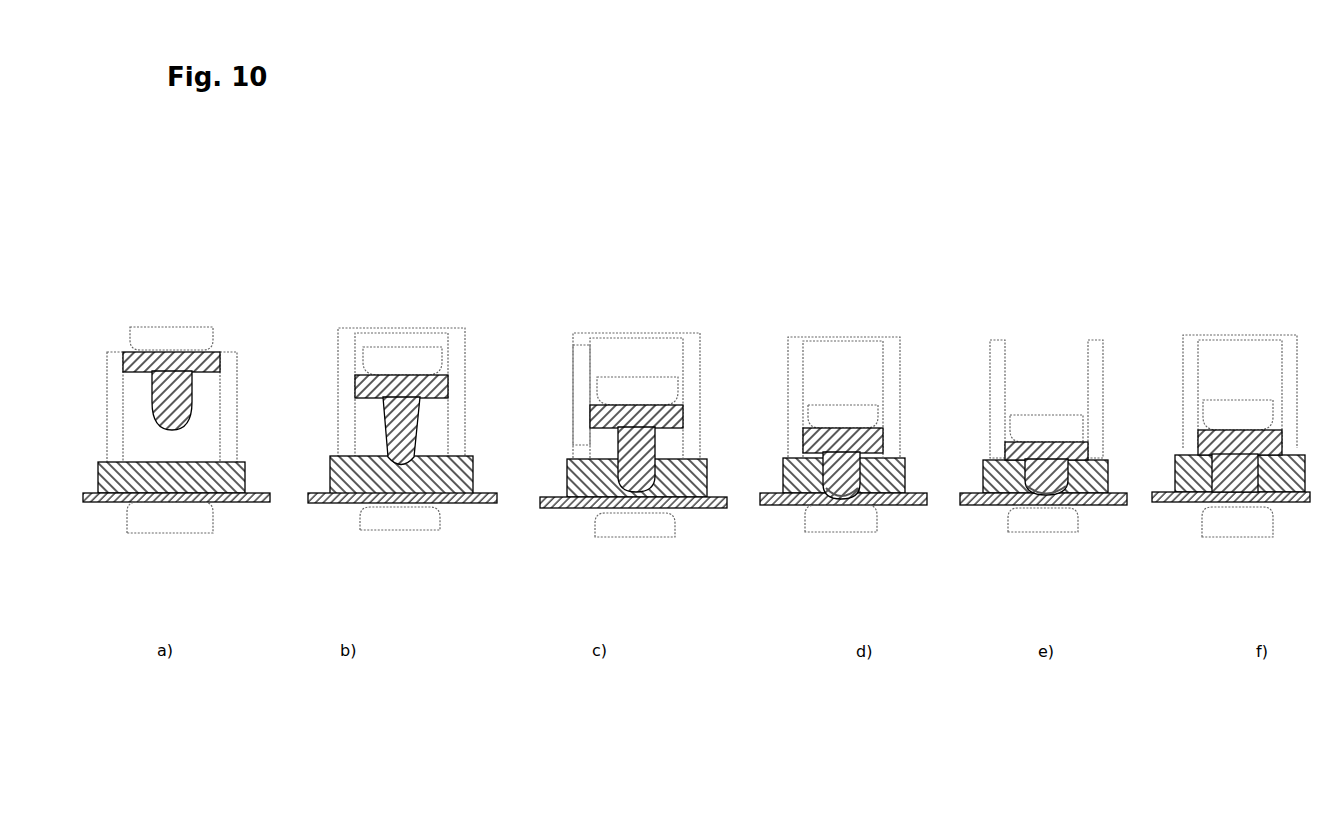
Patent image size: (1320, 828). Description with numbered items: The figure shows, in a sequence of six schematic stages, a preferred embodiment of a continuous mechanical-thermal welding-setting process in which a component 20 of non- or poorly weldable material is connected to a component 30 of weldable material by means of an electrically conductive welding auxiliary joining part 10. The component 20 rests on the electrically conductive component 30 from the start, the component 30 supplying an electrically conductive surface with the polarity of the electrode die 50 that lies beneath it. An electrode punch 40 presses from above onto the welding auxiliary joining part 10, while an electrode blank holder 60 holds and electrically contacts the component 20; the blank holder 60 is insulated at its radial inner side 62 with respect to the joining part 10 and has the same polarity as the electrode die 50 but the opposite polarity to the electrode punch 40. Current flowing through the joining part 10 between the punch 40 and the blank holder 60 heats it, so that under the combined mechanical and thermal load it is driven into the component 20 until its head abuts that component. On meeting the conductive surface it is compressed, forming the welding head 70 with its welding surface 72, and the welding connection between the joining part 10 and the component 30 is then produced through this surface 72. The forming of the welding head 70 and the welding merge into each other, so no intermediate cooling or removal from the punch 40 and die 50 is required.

The welding auxiliary joining part 10 is at (400, 398).
The component of non- or poorly weldable material 20 is at (342, 455).
The component of weldable material 30 is at (337, 503).
The electrode punch 40 is at (403, 367).
The electrode die 50 is at (387, 518).
The electrode blank holder 60 is at (350, 345).
The radial inner side 62 is at (573, 396).
The welding head 70 is at (877, 503).
The welding surface 72 is at (1023, 498).